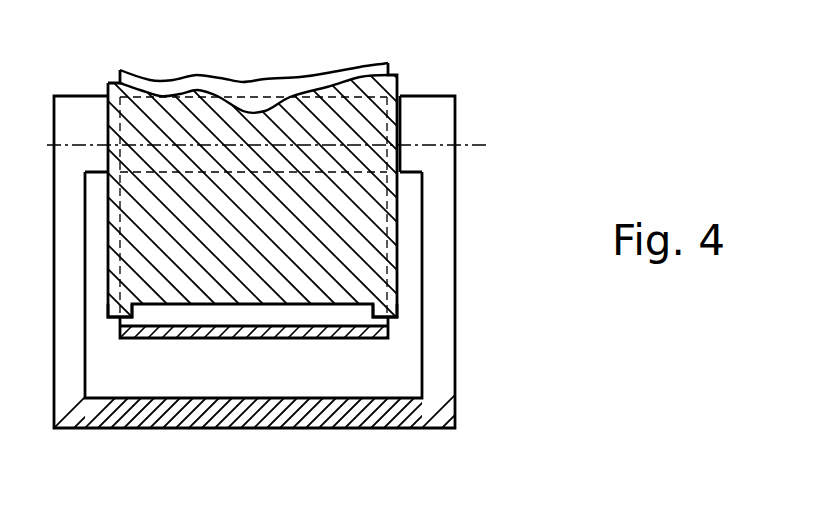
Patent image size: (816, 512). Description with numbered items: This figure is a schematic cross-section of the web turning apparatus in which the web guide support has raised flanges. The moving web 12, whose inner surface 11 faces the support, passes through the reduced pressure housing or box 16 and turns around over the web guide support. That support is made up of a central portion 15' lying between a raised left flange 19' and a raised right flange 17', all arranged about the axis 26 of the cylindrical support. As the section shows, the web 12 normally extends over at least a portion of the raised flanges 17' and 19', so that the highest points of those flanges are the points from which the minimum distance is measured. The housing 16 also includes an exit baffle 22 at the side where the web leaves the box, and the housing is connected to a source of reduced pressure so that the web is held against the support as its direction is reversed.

The inner surface 11 is at (248, 88).
The moving web 12 is at (198, 73).
The central portion 15' is at (318, 190).
The reduced pressure housing 16 is at (455, 255).
The raised right flange 17' is at (447, 319).
The raised left flange 19' is at (68, 299).
The exit baffle 22 is at (433, 110).
The axis 26 is at (480, 145).